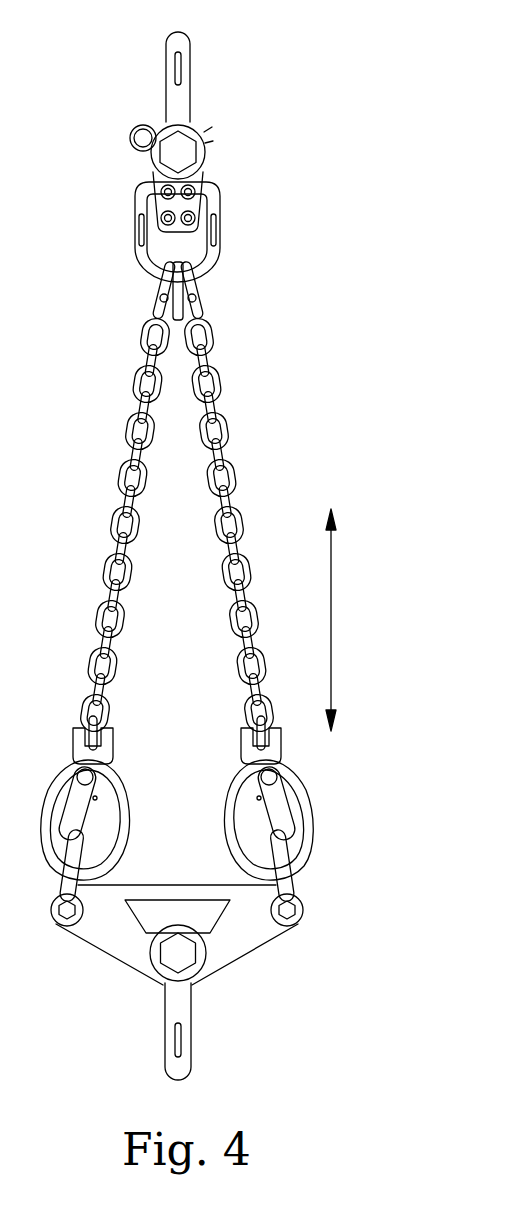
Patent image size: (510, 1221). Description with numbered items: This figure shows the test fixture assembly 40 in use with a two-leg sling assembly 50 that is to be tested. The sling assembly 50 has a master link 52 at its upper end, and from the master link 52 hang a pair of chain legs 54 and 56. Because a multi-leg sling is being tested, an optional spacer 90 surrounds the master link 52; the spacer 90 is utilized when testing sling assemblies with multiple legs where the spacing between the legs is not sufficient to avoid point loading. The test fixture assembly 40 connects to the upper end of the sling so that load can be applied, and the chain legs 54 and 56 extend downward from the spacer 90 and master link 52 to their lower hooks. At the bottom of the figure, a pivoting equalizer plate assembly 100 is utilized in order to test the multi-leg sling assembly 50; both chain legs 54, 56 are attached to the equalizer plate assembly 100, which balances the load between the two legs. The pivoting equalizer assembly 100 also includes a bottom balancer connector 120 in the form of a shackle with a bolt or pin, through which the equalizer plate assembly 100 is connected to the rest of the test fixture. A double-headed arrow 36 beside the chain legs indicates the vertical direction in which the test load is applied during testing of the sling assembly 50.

The test fixture assembly 40 is at (221, 176).
The master link 52 is at (217, 216).
The spacer 90 is at (196, 306).
The chain leg 54 is at (132, 392).
The chain leg 56 is at (220, 383).
The two-leg sling assembly 50 is at (185, 610).
The vertical direction of movement 36 is at (333, 597).
The pivoting equalizer plate assembly 100 is at (187, 982).
The bottom balancer connector 120 is at (182, 1046).